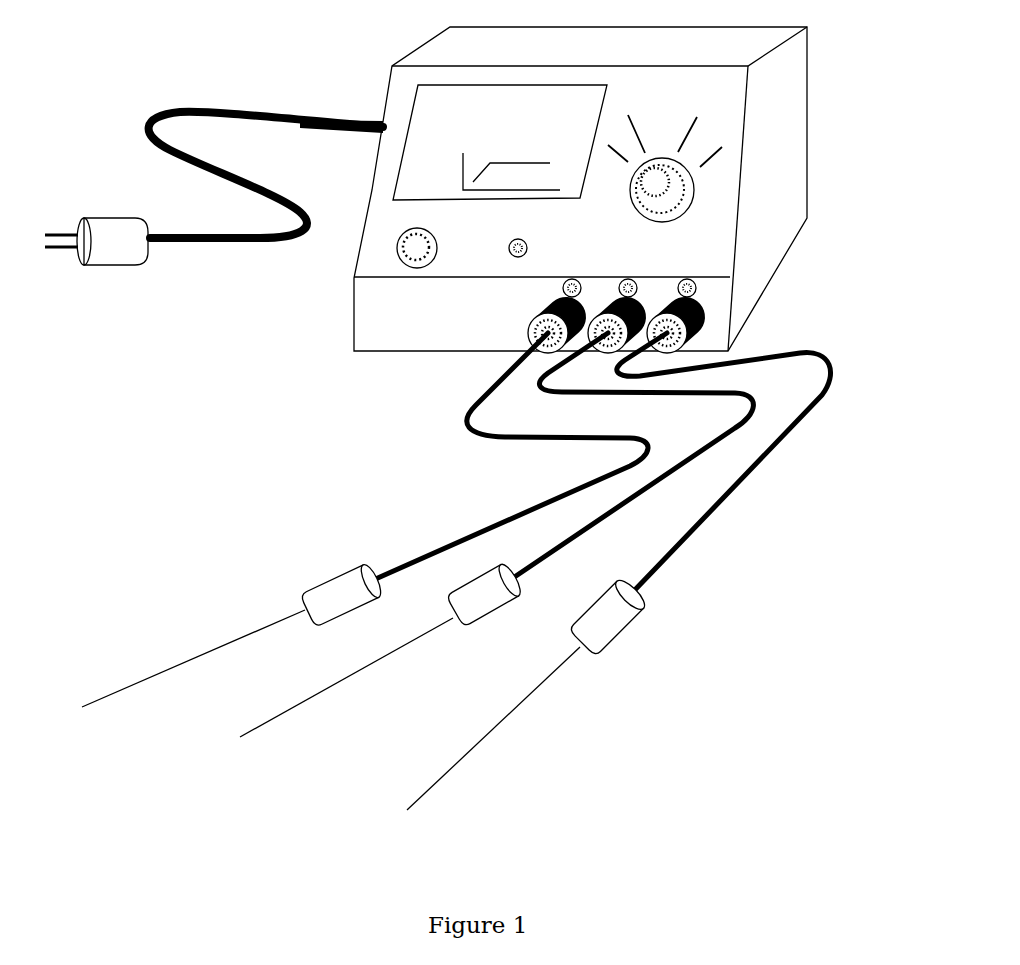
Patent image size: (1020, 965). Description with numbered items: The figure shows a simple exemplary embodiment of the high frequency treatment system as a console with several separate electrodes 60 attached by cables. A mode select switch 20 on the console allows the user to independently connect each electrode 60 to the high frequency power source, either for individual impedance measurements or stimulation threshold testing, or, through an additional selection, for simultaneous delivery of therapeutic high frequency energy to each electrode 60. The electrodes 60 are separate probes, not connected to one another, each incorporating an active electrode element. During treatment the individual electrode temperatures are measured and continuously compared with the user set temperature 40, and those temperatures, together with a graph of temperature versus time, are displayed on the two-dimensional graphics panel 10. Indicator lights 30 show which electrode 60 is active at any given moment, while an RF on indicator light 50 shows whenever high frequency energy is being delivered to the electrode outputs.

The two-dimensional graphics panel 10 is at (418, 143).
The mode select switch 20 is at (715, 180).
The indicator lights 30 is at (715, 287).
The user set temperature 40 is at (398, 258).
The RF on indicator light 50 is at (498, 257).
The electrode 60 is at (480, 560).